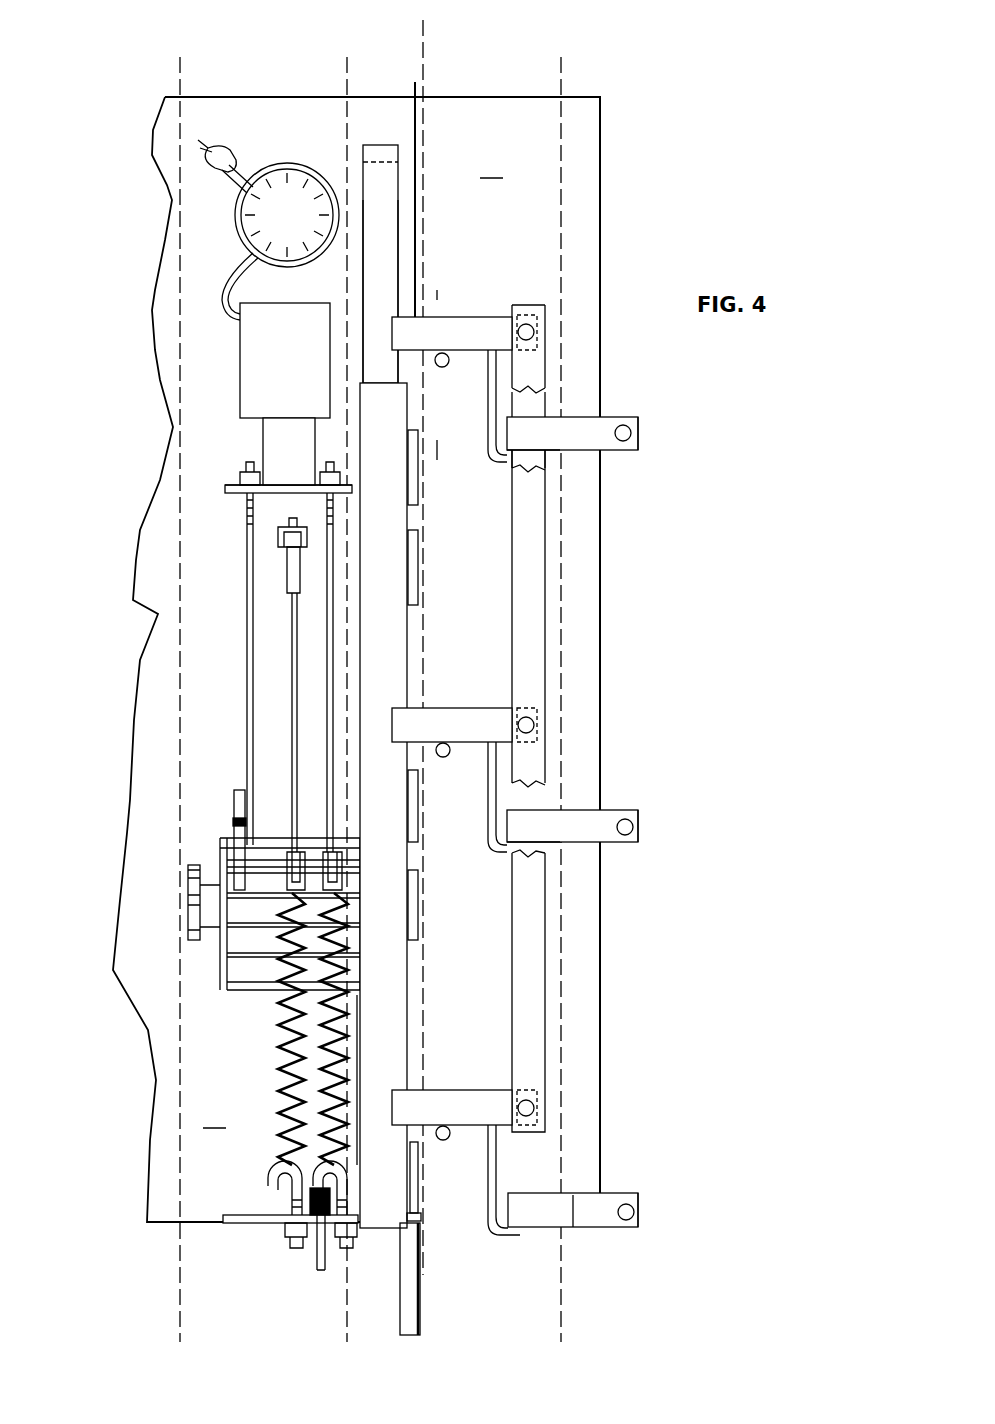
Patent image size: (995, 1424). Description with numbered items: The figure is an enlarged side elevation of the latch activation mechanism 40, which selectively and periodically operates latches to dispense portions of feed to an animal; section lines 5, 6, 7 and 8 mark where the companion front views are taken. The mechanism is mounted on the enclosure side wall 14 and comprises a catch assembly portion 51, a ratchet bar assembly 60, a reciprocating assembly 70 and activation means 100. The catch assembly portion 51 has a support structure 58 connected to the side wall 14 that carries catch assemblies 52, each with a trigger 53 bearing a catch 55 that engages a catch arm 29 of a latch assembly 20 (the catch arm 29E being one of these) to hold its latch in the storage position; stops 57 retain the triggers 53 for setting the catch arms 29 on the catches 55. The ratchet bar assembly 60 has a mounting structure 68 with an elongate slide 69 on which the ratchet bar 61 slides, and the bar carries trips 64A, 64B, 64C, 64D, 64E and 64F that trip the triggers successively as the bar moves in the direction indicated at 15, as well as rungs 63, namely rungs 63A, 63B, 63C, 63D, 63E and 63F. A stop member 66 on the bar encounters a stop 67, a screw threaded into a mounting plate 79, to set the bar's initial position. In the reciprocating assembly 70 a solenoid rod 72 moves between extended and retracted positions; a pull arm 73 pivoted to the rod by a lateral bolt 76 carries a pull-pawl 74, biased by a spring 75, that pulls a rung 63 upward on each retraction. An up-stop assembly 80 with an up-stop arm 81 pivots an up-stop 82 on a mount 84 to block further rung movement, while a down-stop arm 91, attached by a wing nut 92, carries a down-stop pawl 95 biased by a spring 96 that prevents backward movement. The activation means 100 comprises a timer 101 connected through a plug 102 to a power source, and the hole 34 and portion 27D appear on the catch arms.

The section line 5— 5 is at (561, 57).
The section line 6— 6 is at (423, 20).
The section line 7— 7 is at (347, 57).
The section line 8— 8 is at (180, 57).
The enclosure side wall 14 is at (355, 643).
The direction of movement 15 is at (437, 465).
The latch assembly 20 is at (641, 410).
The arm portion 27D is at (573, 1195).
The catch arm 29 is at (600, 452).
The catch arm 29E is at (580, 452).
The mounting hole 34 is at (632, 433).
The latch activation mechanism 40 is at (575, 190).
The catch assembly portion 51 is at (440, 290).
The catch assembly 52 is at (549, 292).
The trigger 53 is at (480, 312).
The catch 55 is at (505, 470).
The stop 57 is at (441, 367).
The support structure 58 is at (543, 620).
The ratchet bar assembly 60 is at (462, 157).
The ratchet bar 61 is at (407, 680).
The rung 63 is at (200, 995).
The rung 63A is at (222, 848).
The rung 63B is at (228, 870).
The rung 63C is at (228, 897).
The rung 63D is at (228, 925).
The rung 63E is at (228, 953).
The rung 63F is at (228, 980).
The trip 64A is at (412, 1198).
The trip 64B is at (418, 810).
The trip 64C is at (418, 482).
The trip 64D is at (415, 1292).
The trip 64E is at (418, 900).
The trip 64F is at (418, 570).
The stop member 66 is at (365, 1170).
The stop 67 is at (315, 1265).
The mounting structure 68 is at (398, 162).
The slide 69 is at (393, 258).
The reciprocating assembly 70 is at (130, 305).
The rod 72 is at (275, 438).
The pull arm 73 is at (330, 648).
The pull-pawl 74 is at (345, 867).
The spring 75 is at (350, 1033).
The lateral bolt 76 is at (258, 375).
The mounting plate 79 is at (235, 1223).
The up-stop assembly 80 is at (221, 550).
The up-stop arm 81 is at (248, 573).
The up-stop 82 is at (235, 815).
The mount 84 is at (190, 880).
The down-stop arm 91 is at (292, 662).
The wing nut 92 is at (305, 530).
The down-stop pawl 95 is at (288, 855).
The spring 96 is at (282, 1005).
The activation means 100 is at (318, 125).
The timer 101 is at (293, 178).
The plug 102 is at (230, 147).